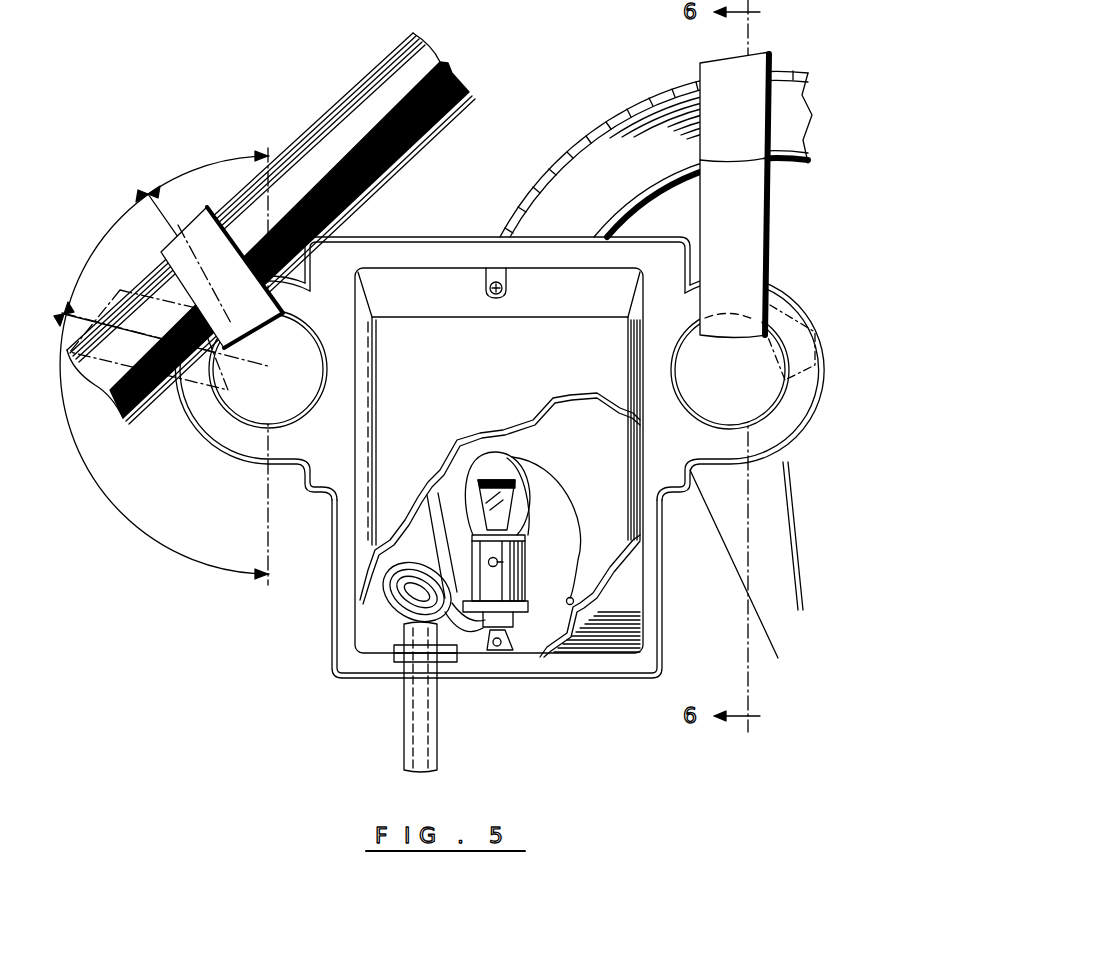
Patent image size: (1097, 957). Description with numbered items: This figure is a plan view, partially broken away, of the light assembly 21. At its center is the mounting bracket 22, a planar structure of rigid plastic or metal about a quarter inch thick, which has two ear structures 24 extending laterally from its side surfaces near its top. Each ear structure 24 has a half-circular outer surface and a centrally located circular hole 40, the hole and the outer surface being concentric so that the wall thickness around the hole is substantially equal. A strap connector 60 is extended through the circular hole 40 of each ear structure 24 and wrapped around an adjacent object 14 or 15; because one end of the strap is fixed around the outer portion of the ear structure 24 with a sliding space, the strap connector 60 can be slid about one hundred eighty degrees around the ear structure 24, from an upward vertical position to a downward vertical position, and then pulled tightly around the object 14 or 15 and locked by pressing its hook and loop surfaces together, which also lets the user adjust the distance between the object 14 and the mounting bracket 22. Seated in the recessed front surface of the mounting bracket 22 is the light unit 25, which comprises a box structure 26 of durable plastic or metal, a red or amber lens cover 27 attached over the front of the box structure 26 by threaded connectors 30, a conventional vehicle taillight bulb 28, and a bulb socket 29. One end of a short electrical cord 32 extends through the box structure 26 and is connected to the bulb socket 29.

The adjacent object 14 is at (455, 74).
The adjacent object 15 is at (664, 93).
The light assembly 21 is at (478, 226).
The mounting bracket 22 is at (330, 603).
The ear structure 24 is at (226, 455).
The light unit 25 is at (440, 268).
The box structure 26 is at (507, 650).
The lens cover 27 is at (565, 298).
The vehicle taillight bulb 28 is at (522, 467).
The bulb socket 29 is at (522, 556).
The threaded connector 30 is at (508, 289).
The short electrical cord 32 is at (440, 742).
The circular hole 40 is at (306, 401).
The strap connector 60 is at (153, 312).